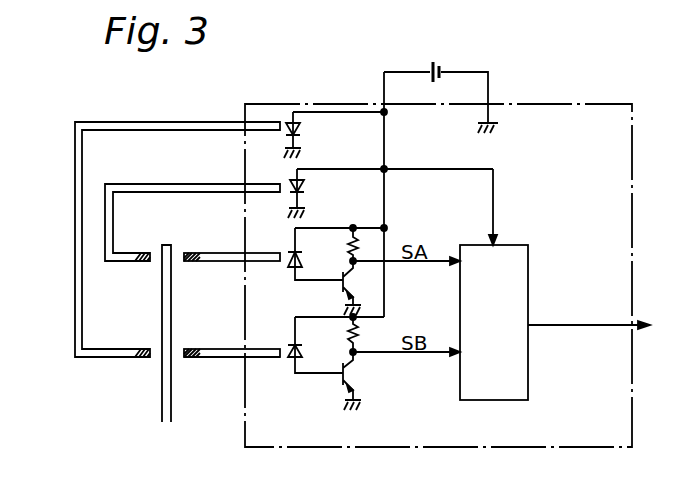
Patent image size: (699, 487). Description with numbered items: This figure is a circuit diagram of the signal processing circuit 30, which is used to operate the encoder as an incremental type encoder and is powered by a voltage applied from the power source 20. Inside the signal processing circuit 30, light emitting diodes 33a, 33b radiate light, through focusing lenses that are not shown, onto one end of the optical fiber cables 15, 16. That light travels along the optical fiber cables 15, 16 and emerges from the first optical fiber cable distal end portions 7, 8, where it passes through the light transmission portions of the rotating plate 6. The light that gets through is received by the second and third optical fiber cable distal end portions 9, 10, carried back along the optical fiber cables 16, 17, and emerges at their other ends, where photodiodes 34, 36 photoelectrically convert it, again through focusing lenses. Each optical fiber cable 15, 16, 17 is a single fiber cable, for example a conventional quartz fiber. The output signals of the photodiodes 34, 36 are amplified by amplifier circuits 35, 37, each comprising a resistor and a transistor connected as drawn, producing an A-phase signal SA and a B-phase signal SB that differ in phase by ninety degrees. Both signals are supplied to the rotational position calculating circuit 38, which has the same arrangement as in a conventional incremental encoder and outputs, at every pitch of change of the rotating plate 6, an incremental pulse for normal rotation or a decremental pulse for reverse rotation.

The rotating plate 6 is at (168, 245).
The first optical fiber cable distal end portion 7 is at (143, 262).
The first optical fiber cable distal end portion 8 is at (143, 348).
The second optical fiber cable distal end portion 9 is at (198, 253).
The third optical fiber cable distal end portion 10 is at (190, 348).
The optical fiber cable 15 is at (170, 184).
The optical fiber cable 16 is at (169, 121).
The optical fiber cable 17 is at (215, 360).
The power source 20 is at (436, 57).
The signal processing circuit 30 is at (636, 146).
The light emitting diode 33a is at (306, 190).
The light emitting diode 33b is at (302, 134).
The photodiode 34 is at (287, 248).
The amplifier circuit 35 is at (345, 275).
The photodiode 36 is at (288, 346).
The amplifier circuit 37 is at (343, 361).
The rotational position calculating circuit 38 is at (530, 306).